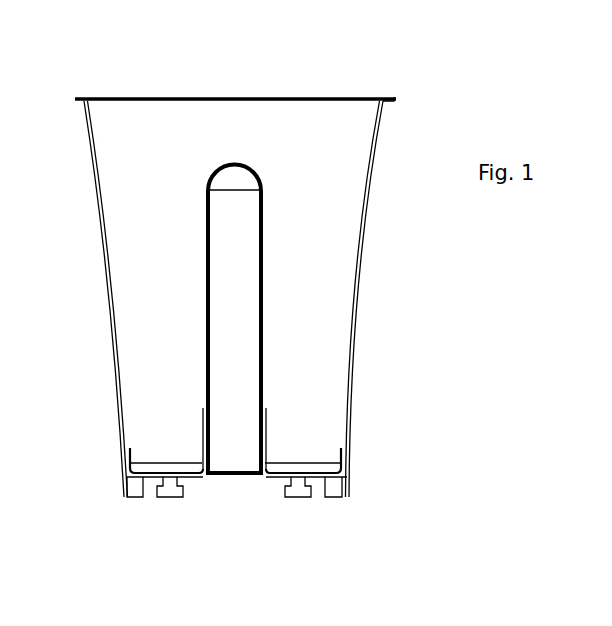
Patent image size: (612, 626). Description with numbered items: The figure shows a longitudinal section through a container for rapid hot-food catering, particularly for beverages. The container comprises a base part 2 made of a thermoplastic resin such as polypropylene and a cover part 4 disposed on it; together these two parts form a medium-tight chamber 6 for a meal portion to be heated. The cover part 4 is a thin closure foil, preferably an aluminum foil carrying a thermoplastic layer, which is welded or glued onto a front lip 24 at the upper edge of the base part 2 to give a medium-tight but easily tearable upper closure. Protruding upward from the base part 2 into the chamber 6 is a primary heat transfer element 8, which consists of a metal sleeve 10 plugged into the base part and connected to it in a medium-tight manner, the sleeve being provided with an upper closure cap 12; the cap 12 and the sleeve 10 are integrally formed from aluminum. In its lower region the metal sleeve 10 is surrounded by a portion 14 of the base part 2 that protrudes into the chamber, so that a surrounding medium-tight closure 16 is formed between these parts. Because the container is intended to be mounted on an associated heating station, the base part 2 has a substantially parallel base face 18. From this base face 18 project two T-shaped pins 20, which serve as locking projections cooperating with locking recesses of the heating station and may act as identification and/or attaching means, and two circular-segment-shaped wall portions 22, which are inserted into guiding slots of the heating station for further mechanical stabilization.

The base part 2 is at (362, 278).
The cover part 4 is at (158, 97).
The chamber 6 is at (143, 196).
The primary heat transfer element 8 is at (185, 281).
The metal sleeve 10 is at (302, 256).
The upper closure cap 12 is at (235, 173).
The portion of the base part 14 is at (203, 452).
The medium-tight closure 16 is at (192, 413).
The base face 18 is at (199, 474).
The T-shaped pins 20 is at (163, 497).
The circular-segment-shaped wall portions 22 is at (127, 497).
The front lip 24 is at (387, 98).